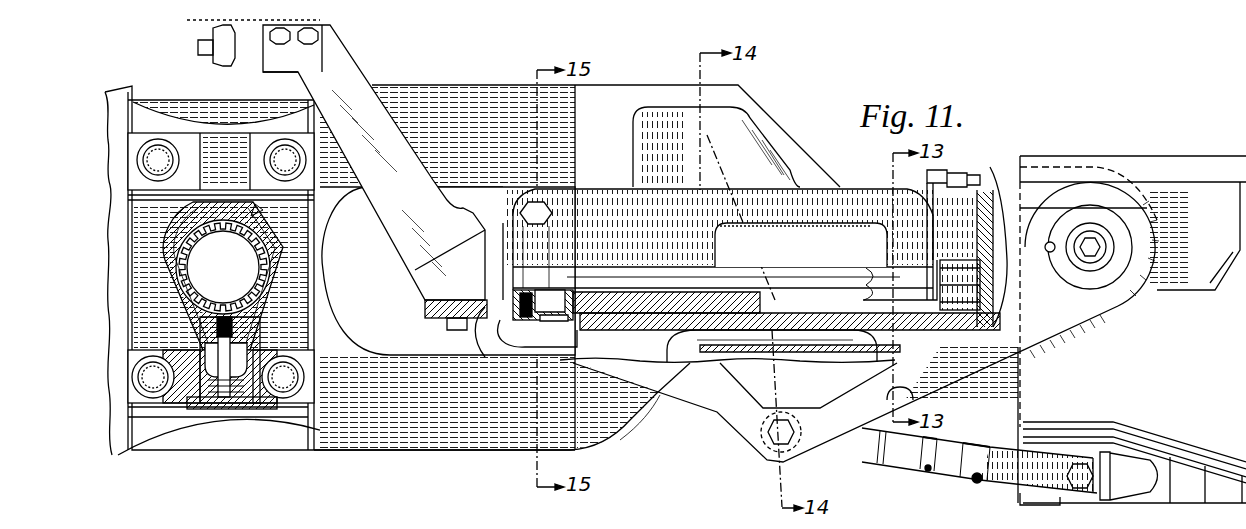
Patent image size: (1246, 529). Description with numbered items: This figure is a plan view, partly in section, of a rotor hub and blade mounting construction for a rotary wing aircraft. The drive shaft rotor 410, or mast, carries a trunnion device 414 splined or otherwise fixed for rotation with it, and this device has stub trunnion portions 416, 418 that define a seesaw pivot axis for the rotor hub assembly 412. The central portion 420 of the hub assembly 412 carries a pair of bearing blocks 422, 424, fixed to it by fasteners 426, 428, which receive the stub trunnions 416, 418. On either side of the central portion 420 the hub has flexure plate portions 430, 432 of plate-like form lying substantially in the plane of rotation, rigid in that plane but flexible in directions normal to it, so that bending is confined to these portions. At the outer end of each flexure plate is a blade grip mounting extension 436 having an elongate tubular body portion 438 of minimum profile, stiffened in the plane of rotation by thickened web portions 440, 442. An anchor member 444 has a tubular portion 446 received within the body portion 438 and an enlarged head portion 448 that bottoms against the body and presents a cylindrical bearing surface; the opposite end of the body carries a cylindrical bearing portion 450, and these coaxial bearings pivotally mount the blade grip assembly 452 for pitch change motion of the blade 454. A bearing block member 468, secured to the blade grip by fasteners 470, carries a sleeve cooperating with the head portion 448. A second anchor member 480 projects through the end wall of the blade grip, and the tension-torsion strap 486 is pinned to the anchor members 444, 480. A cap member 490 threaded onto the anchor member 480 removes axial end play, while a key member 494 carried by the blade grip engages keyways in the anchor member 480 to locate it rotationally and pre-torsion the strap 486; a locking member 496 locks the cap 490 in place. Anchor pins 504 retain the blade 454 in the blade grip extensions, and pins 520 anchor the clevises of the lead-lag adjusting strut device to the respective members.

The drive shaft rotor 410 is at (247, 278).
The rotor hub assembly 412 is at (376, 468).
The trunnion device 414 is at (292, 243).
The stub trunnion portion 416 is at (258, 203).
The stub trunnion portion 418 is at (253, 348).
The central portion 420 is at (255, 420).
The bearing block 422 is at (182, 136).
The bearing block 424 is at (187, 407).
The fasteners 426 is at (158, 152).
The fasteners 428 is at (147, 377).
The flexure plate portion 430 is at (110, 298).
The flexure plate portion 432 is at (507, 442).
The blade grip mounting extension 436 is at (790, 118).
The tubular body portion 438 is at (723, 323).
The thickened web portion 440 is at (637, 92).
The thickened web portion 442 is at (635, 410).
The anchor member 444 is at (600, 279).
The tubular portion 446 is at (647, 318).
The enlarged head portion 448 is at (573, 290).
The cylindrical bearing portion 450 is at (897, 343).
The blade grip assembly 452 is at (872, 176).
The blade 454 is at (1155, 152).
The bearing block member 468 is at (513, 348).
The fasteners 470 is at (530, 193).
The anchor member 480 is at (903, 270).
The tension-torsion strap 486 is at (817, 270).
The cap member 490 is at (977, 320).
The key member 494 is at (940, 348).
The locking member 496 is at (980, 203).
The anchor pins 504 is at (1082, 243).
The pins 520 is at (790, 440).